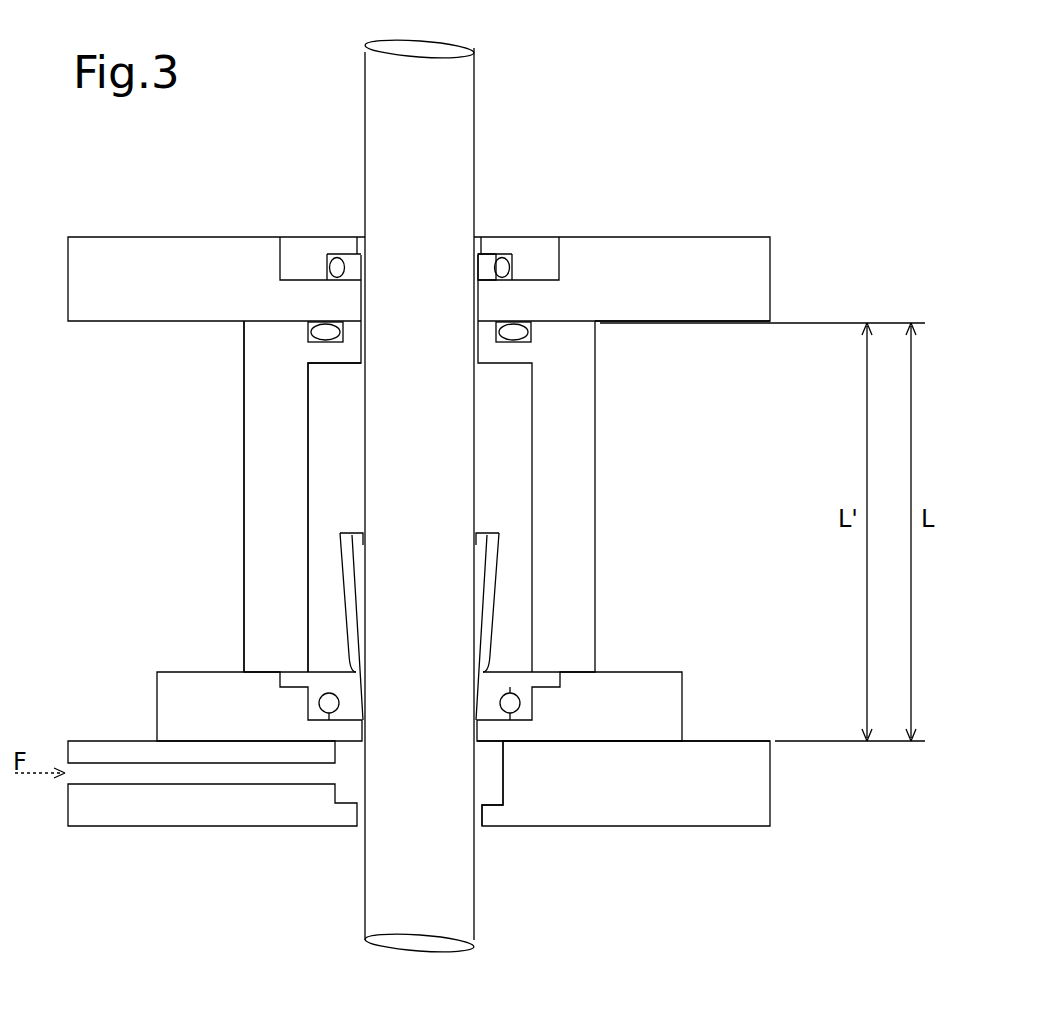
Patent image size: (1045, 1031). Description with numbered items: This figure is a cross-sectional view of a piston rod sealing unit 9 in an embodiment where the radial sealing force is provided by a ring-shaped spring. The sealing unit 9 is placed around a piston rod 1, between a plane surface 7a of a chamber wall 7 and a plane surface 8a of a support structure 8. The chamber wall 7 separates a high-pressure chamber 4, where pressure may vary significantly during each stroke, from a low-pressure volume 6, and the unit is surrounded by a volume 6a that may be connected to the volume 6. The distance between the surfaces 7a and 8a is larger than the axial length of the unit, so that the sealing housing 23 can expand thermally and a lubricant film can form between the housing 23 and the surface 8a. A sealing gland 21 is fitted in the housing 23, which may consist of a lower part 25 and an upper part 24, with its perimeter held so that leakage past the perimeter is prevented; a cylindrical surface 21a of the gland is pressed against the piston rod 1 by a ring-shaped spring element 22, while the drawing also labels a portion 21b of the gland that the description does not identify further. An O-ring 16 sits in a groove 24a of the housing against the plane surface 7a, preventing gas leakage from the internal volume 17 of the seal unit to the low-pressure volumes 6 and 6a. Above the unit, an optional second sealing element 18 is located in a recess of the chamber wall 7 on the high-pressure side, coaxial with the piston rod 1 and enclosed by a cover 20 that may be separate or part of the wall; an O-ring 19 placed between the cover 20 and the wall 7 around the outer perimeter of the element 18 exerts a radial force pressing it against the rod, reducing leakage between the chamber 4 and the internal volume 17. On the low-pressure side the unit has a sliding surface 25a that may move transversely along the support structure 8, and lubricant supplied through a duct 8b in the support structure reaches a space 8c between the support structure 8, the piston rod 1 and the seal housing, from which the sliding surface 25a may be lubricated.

The piston rod 1 is at (458, 103).
The high-pressure chamber 4 is at (235, 144).
The low-pressure volume 6 is at (235, 907).
The volume surrounding the sealing unit 6a is at (182, 496).
The chamber wall 7 is at (708, 247).
The plane surface of the chamber wall 7a is at (700, 322).
The support structure 8 is at (635, 803).
The plane surface of the support structure 8a is at (717, 740).
The duct 8b is at (178, 773).
The space 8c is at (488, 793).
The sealing unit 9 is at (234, 374).
The O-ring 16 is at (527, 322).
The internal volume 17 is at (328, 471).
The second sealing element 18 is at (487, 253).
The O-ring 19 is at (507, 253).
The cover 20 is at (537, 250).
The sealing gland 21 is at (500, 676).
The cylindrical surface of the gland 21a is at (357, 690).
The seal lip 21b is at (345, 560).
The ring-shaped spring element 22 is at (518, 700).
The sealing housing 23 is at (619, 491).
The upper part of the housing 24 is at (588, 405).
The groove 24a is at (525, 343).
The lower part of the housing 25 is at (675, 698).
The sliding surface 25a is at (570, 743).